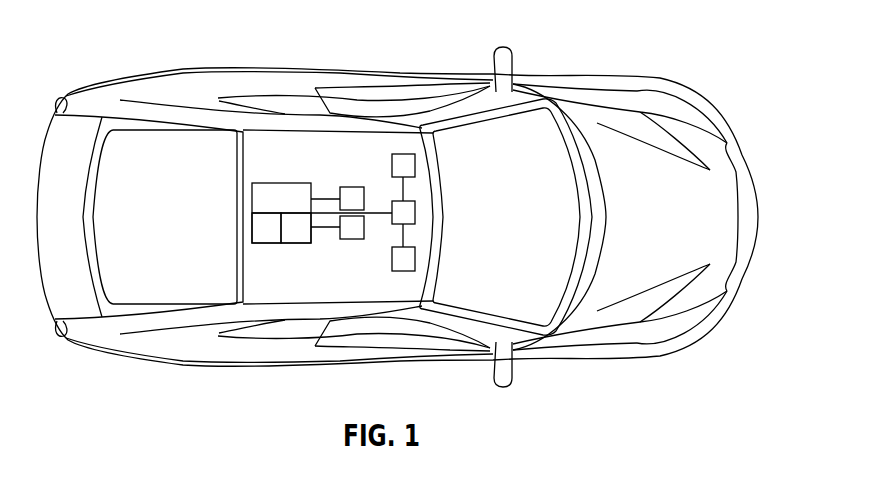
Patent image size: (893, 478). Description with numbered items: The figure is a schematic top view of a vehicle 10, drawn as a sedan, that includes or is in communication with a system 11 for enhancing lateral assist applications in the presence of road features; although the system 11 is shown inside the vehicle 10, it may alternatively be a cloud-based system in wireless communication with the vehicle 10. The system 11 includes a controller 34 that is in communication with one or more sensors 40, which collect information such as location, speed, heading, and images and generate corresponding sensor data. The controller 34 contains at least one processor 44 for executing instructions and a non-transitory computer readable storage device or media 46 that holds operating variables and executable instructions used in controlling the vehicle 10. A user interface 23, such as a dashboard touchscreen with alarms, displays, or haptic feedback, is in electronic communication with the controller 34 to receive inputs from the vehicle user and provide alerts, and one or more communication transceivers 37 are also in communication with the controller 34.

The vehicle 10 is at (609, 78).
The system 11 is at (346, 228).
The user interface 23 is at (352, 186).
The controller 34 is at (275, 183).
The communication transceivers 37 is at (353, 242).
The sensors 40 is at (415, 165).
The processor 44 is at (266, 244).
The non-transitory computer readable storage device or media 46 is at (295, 243).